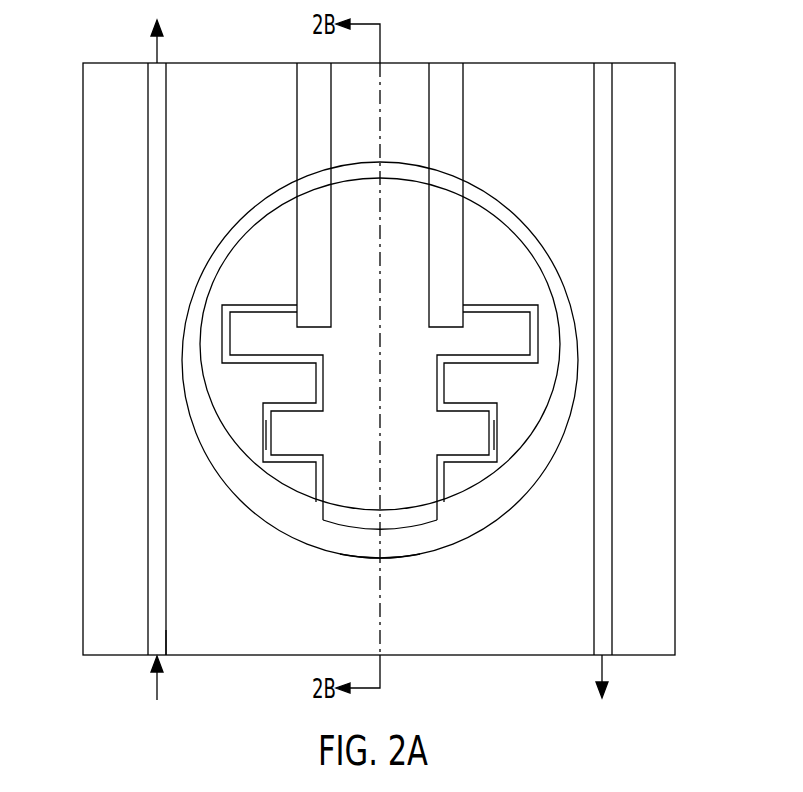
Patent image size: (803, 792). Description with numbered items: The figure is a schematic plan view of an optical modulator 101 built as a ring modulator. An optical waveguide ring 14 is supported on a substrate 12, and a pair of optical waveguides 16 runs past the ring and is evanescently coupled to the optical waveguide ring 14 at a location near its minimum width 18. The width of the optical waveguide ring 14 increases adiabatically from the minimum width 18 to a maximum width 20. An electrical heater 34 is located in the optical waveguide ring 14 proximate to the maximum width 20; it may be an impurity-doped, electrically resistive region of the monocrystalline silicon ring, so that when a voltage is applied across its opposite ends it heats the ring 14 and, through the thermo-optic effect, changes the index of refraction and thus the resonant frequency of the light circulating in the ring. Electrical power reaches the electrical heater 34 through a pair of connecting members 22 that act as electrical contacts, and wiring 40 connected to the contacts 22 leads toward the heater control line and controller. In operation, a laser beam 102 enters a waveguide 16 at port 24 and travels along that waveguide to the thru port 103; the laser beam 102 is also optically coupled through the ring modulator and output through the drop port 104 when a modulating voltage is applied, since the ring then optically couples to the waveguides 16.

The substrate 12 is at (83, 605).
The optical waveguide ring 14 is at (503, 506).
The optical waveguides 16 is at (166, 540).
The minimum width 18 is at (380, 291).
The maximum width 20 is at (380, 558).
The connecting members 22 is at (271, 428).
The port 24 is at (166, 646).
The electrical heater 34 is at (352, 501).
The wiring 40 is at (297, 149).
The optical modulator 101 is at (352, 372).
The laser beam 102 is at (159, 698).
The thru port 103 is at (166, 66).
The drop port 104 is at (603, 653).